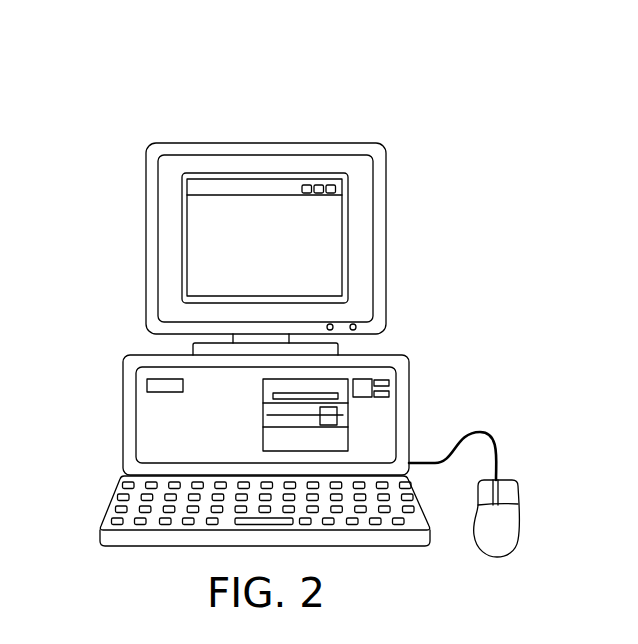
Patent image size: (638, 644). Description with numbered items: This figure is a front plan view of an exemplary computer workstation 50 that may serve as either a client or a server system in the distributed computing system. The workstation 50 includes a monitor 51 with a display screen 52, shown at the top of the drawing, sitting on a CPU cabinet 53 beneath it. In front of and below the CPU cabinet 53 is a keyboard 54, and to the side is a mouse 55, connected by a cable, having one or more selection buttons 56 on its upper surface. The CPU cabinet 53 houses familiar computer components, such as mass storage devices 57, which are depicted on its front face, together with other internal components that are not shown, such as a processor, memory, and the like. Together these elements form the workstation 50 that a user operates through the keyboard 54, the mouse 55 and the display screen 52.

The computer workstation 50 is at (177, 91).
The monitor 51 is at (146, 238).
The display screen 52 is at (277, 255).
The CPU cabinet 53 is at (147, 415).
The keyboard 54 is at (112, 500).
The mouse 55 is at (510, 528).
The selection buttons 56 is at (507, 490).
The mass storage devices 57 is at (261, 390).